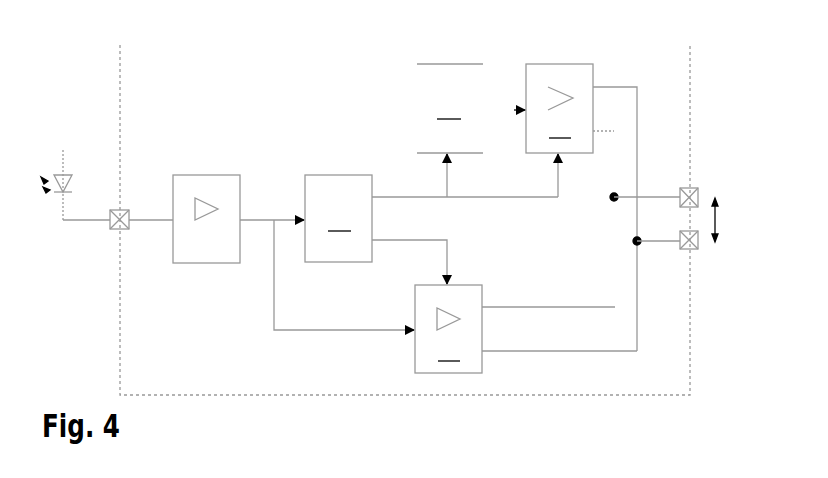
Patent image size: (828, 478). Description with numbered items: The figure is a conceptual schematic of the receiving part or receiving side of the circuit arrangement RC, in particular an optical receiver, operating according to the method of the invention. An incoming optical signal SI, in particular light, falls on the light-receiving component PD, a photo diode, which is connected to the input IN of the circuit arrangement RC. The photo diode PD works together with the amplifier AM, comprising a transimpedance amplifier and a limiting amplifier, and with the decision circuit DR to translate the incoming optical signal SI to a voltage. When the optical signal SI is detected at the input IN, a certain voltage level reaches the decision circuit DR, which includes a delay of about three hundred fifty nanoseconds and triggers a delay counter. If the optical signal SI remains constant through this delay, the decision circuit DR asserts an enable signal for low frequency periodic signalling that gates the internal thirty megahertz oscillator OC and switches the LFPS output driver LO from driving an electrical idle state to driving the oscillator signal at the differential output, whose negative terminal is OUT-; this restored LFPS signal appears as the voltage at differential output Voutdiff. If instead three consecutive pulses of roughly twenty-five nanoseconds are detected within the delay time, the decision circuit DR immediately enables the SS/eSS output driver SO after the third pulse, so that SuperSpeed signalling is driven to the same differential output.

The circuit arrangement RC is at (120, 80).
The light-receiving component PD is at (72, 185).
The optical signal SI is at (45, 177).
The input IN is at (119, 213).
The amplifier AM is at (208, 175).
The decision circuit DR is at (338, 218).
The oscillator stage OC is at (450, 108).
The LFPS output driver LO is at (575, 207).
The SS/eSS output driver SO is at (526, 329).
The second terminal of differential output OUT- is at (668, 248).
The voltage at differential output Voutdiff is at (737, 220).